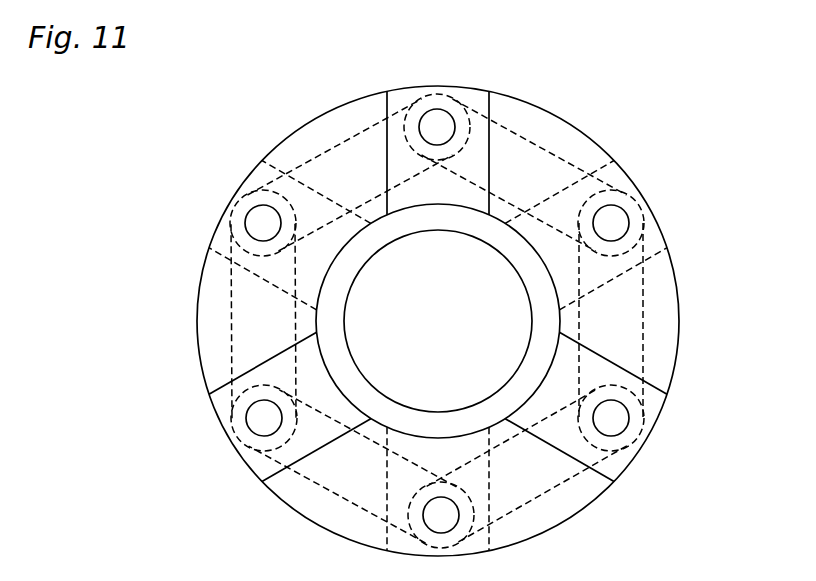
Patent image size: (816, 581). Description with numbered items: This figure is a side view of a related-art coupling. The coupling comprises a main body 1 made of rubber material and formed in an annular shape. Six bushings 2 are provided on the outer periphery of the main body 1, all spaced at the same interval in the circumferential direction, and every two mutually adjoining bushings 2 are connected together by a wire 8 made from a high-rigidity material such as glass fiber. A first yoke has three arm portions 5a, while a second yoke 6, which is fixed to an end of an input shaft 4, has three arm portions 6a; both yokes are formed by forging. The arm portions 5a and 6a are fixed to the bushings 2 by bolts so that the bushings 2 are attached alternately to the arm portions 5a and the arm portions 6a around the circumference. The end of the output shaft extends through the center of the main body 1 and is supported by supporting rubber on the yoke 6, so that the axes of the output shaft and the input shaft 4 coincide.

The main body 1 is at (597, 135).
The bushings 2 is at (407, 108).
The input shaft 4 is at (382, 420).
The arm portions 5a is at (655, 254).
The second yoke 6 is at (512, 421).
The arm portions 6a is at (490, 92).
The wire 8 is at (543, 145).